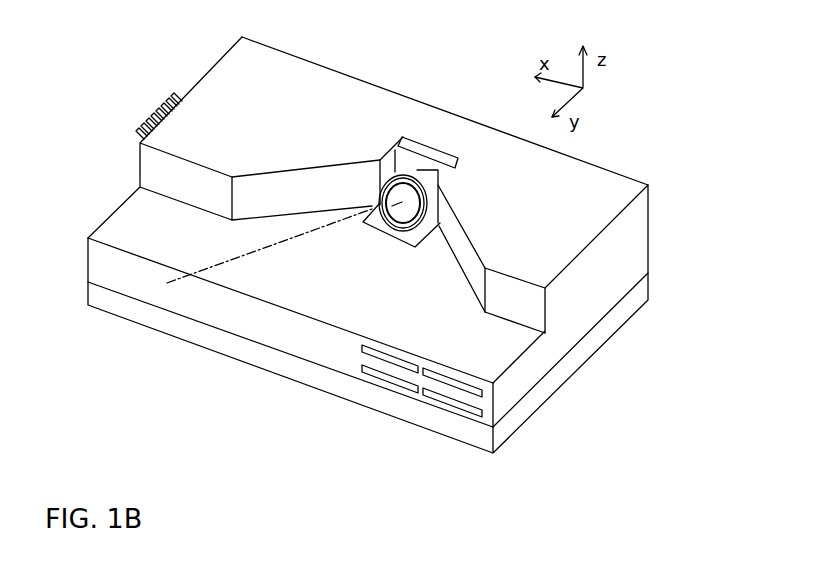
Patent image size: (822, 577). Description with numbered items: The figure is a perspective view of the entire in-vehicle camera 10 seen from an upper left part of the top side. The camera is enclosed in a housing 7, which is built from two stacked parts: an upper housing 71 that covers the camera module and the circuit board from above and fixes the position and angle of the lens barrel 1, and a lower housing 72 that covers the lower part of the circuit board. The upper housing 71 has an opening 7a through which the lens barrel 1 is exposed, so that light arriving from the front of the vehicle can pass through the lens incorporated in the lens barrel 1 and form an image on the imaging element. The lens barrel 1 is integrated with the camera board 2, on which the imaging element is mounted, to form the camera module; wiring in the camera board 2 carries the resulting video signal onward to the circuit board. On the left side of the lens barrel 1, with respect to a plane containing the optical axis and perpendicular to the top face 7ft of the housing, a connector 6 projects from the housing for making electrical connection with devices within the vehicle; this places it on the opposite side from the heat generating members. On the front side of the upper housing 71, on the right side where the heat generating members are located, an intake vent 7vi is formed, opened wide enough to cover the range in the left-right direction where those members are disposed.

The in-vehicle camera 10 is at (622, 171).
The housing 7 is at (649, 370).
The upper housing 71 is at (578, 313).
The lower housing 72 is at (533, 402).
The top face 7ft is at (275, 117).
The intake vent 7vi is at (412, 390).
The opening 7a is at (453, 172).
The connector 6 is at (158, 93).
The camera board 2 is at (410, 157).
The lens barrel 1 is at (437, 176).